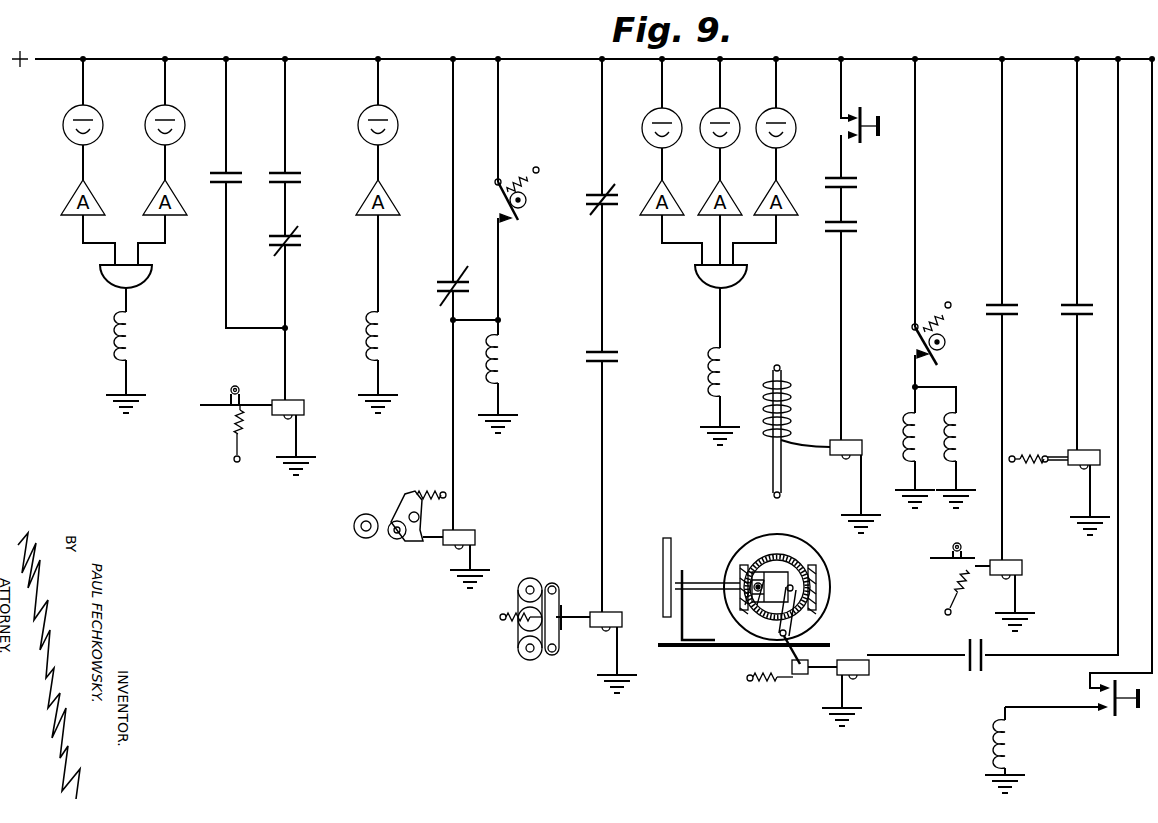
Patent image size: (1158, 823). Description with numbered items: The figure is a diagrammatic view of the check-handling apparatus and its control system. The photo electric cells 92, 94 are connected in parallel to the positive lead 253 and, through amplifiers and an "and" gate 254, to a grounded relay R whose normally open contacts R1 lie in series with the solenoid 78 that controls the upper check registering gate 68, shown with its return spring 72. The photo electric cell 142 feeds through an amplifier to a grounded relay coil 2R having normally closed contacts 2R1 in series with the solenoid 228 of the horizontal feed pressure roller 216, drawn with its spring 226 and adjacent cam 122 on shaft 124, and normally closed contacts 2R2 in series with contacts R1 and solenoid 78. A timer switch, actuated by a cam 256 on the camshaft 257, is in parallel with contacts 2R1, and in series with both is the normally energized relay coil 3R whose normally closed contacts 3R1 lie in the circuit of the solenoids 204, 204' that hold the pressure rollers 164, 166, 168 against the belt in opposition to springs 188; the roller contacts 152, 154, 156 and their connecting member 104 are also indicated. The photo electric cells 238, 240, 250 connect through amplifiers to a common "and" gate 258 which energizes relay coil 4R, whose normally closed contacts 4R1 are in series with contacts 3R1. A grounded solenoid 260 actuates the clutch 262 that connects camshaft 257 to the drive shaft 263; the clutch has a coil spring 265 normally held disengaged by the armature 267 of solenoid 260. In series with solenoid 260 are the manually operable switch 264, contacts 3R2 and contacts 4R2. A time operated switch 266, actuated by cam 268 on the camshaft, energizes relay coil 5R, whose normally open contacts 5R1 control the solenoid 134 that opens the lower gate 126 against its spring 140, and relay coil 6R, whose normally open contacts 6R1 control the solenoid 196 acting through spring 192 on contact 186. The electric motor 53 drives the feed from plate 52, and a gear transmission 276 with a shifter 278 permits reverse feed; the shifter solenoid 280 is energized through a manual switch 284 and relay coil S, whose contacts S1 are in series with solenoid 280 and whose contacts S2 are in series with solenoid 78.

The photo electric cell 92 is at (62, 119).
The photo electric cell 94 is at (145, 119).
The 'and' gate / timer operated switch 254 is at (140, 280).
The relay R is at (118, 333).
The normally open contacts S2 is at (227, 171).
The normally open contacts R1 is at (286, 171).
The normally closed contacts 2R2 is at (293, 241).
The solenoid 78 is at (298, 416).
The upper check registering gate 68 is at (230, 408).
The spring 72 is at (235, 451).
The photo electric cell 142 is at (387, 113).
The relay coil 2R is at (382, 365).
The normally closed contacts 2R1 is at (437, 287).
The relay coil 3R is at (504, 373).
The lead 253 is at (428, 59).
The camshaft 257 is at (539, 168).
The cam 256 is at (527, 198).
The normally closed contacts 4R1 is at (595, 215).
The normally closed contacts 3R1 is at (611, 361).
The photo electric cell 250 is at (646, 145).
The photo electric cell 240 is at (712, 146).
The photo electric cell 238 is at (769, 146).
The 'and' gate 258 is at (740, 272).
The relay coil 4R is at (725, 364).
The manually operable switch 264 is at (864, 143).
The contacts 3R2 is at (856, 184).
The contacts 4R2 is at (856, 228).
The time operated switch 266 is at (931, 304).
The cam 268 is at (942, 352).
The relay coil 5R is at (910, 420).
The relay coil 6R is at (960, 426).
The solenoid 260 is at (866, 448).
The normally open contacts 5R1 is at (1005, 305).
The normally open contacts 6R1 is at (1079, 305).
The solenoid 196 is at (1088, 450).
The spring 192 is at (1037, 471).
The contact 186 is at (1011, 456).
The solenoid 134 is at (1020, 572).
The lower gate 126 is at (945, 557).
The spring 140 is at (952, 593).
The normally open contacts S1 is at (980, 669).
The relay coil S is at (1012, 739).
The manual or button switch 284 is at (1113, 716).
The shifter solenoid 280 is at (872, 679).
The clutch 262 is at (758, 438).
The coil spring 265 is at (790, 389).
The armature 267 is at (822, 440).
The drive shaft 263 is at (785, 470).
The electric motor 53 is at (746, 560).
The plate 52 is at (671, 557).
The shifter 278 is at (747, 611).
The gear transmission 276 is at (789, 542).
The solenoid 228 is at (471, 530).
The horizontal feed pressure roller 216 is at (388, 540).
The spring 226 is at (406, 489).
The cam 122 is at (354, 522).
The shaft 124 is at (355, 529).
The contact 152 is at (528, 578).
The contact 104 is at (520, 596).
The contact 154 is at (524, 660).
The contact 156 is at (515, 630).
The springs 188 is at (505, 621).
The pressure roller 164 is at (554, 582).
The pressure roller 168 is at (554, 659).
The pressure roller 166 is at (562, 612).
The solenoid 204 is at (614, 631).
The solenoid 204' is at (624, 595).